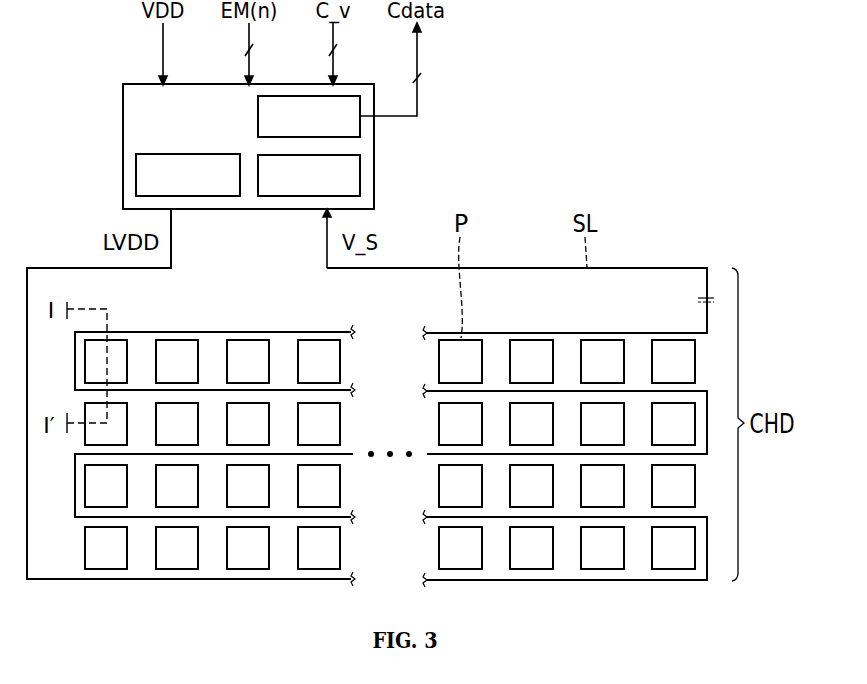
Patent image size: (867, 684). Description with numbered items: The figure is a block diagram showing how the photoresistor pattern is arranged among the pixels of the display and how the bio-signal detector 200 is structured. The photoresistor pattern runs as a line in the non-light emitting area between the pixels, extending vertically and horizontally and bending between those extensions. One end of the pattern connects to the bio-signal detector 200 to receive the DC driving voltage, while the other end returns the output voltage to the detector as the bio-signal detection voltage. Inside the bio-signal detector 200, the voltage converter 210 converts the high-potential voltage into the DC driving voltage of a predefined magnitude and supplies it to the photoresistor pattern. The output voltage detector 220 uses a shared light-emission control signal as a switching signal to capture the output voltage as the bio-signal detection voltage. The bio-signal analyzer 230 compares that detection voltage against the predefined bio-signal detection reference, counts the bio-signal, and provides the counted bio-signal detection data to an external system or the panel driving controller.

The bio-signal detector 200 is at (375, 146).
The voltage converter 210 is at (169, 189).
The output voltage detector 220 is at (290, 189).
The bio-signal analyzer 230 is at (291, 129).